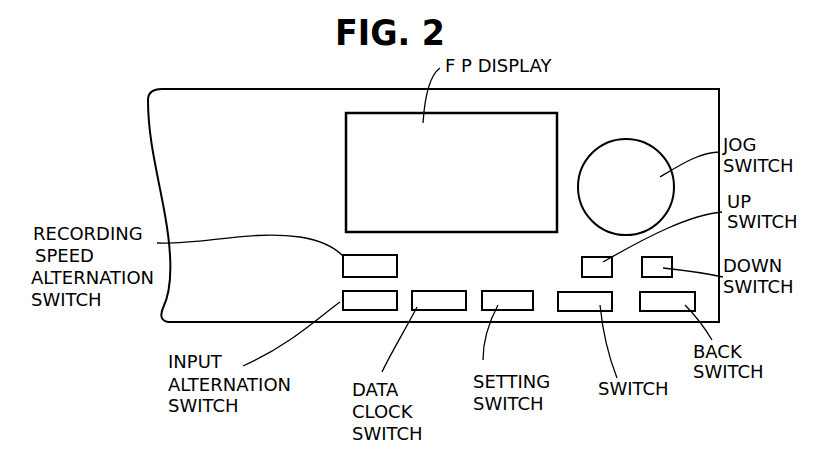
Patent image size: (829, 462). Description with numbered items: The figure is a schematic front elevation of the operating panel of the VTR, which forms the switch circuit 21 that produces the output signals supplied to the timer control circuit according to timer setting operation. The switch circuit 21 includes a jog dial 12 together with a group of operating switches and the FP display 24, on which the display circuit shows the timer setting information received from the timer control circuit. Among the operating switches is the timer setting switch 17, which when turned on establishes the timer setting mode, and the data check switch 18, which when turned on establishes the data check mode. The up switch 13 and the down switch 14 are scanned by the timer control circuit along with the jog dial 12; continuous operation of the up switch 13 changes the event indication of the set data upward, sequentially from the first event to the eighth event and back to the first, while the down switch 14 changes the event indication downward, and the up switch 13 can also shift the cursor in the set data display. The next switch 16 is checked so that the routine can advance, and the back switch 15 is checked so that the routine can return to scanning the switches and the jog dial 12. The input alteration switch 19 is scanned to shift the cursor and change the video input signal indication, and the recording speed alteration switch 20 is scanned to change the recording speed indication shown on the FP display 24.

The jog dial 12 is at (660, 153).
The up switch 13 is at (582, 271).
The down switch 14 is at (672, 258).
The back switch 15 is at (665, 311).
The next switch 16 is at (589, 311).
The timer setting switch 17 is at (515, 311).
The data check switch 18 is at (440, 311).
The input alteration switch 19 is at (368, 311).
The recording speed alteration switch 20 is at (343, 272).
The switch circuit 21 is at (270, 98).
The FP display 24 is at (346, 155).